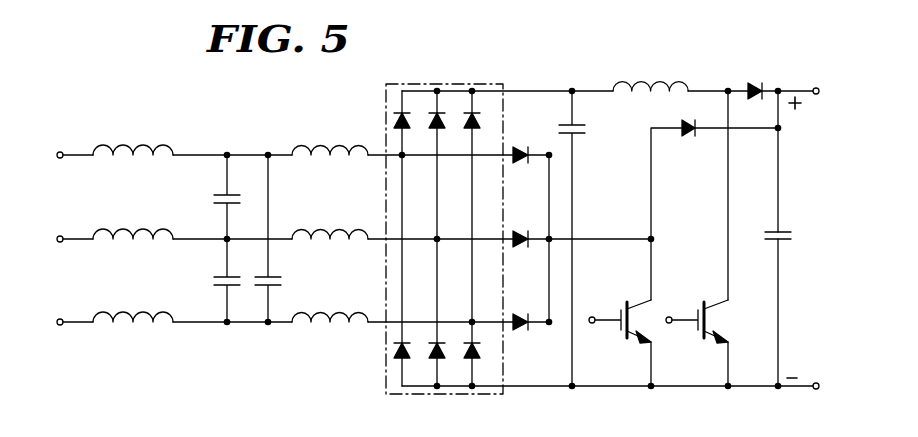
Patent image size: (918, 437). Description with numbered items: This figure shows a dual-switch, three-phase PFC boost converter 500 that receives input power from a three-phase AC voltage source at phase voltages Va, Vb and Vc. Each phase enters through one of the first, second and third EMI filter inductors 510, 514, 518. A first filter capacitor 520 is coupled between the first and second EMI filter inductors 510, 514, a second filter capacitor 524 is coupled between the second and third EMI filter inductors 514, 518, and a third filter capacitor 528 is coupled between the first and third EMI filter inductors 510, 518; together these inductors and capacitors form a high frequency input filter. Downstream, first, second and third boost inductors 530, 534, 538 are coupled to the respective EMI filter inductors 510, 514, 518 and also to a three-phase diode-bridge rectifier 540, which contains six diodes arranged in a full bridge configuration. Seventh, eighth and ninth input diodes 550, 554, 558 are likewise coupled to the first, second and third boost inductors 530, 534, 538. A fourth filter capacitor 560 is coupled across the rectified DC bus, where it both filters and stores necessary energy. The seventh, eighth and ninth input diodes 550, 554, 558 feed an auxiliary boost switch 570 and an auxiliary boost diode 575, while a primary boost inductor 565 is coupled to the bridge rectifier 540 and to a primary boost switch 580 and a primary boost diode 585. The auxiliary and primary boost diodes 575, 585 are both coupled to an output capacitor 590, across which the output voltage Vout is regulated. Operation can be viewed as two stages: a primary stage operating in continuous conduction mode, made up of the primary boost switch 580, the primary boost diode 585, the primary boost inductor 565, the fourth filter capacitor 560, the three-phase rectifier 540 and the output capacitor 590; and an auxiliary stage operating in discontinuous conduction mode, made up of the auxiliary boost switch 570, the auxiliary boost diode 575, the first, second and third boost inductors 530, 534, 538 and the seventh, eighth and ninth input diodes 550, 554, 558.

The dual-switch, three-phase PFC boost converter 500 is at (141, 78).
The first EMI filter inductor 510 is at (107, 145).
The second EMI filter inductor 514 is at (107, 229).
The third EMI filter inductor 518 is at (107, 312).
The first filter capacitor 520 is at (216, 186).
The second filter capacitor 524 is at (216, 270).
The third filter capacitor 528 is at (278, 275).
The first boost inductor 530 is at (322, 145).
The second boost inductor 534 is at (322, 229).
The third boost inductor 538 is at (335, 312).
The three-phase diode-bridge rectifier 540 is at (386, 360).
The seventh input diode 550 is at (526, 147).
The eighth input diode 554 is at (519, 245).
The ninth input diode 558 is at (519, 329).
The fourth filter capacitor 560 is at (580, 134).
The primary boost inductor 565 is at (645, 78).
The auxiliary boost switch 570 is at (619, 311).
The auxiliary boost diode 575 is at (685, 132).
The primary boost switch 580 is at (697, 333).
The primary boost diode 585 is at (757, 85).
The output capacitor 590 is at (775, 226).